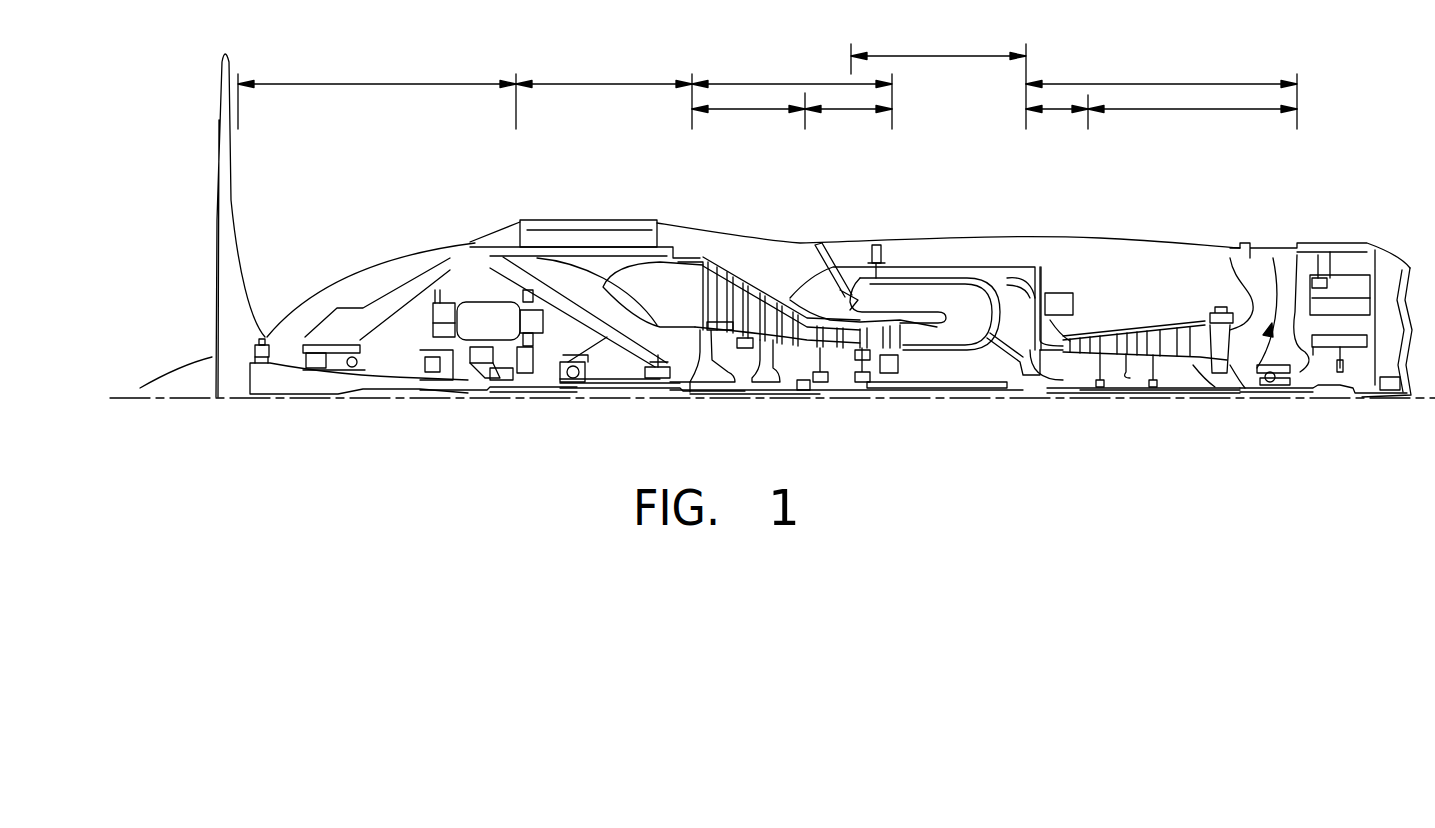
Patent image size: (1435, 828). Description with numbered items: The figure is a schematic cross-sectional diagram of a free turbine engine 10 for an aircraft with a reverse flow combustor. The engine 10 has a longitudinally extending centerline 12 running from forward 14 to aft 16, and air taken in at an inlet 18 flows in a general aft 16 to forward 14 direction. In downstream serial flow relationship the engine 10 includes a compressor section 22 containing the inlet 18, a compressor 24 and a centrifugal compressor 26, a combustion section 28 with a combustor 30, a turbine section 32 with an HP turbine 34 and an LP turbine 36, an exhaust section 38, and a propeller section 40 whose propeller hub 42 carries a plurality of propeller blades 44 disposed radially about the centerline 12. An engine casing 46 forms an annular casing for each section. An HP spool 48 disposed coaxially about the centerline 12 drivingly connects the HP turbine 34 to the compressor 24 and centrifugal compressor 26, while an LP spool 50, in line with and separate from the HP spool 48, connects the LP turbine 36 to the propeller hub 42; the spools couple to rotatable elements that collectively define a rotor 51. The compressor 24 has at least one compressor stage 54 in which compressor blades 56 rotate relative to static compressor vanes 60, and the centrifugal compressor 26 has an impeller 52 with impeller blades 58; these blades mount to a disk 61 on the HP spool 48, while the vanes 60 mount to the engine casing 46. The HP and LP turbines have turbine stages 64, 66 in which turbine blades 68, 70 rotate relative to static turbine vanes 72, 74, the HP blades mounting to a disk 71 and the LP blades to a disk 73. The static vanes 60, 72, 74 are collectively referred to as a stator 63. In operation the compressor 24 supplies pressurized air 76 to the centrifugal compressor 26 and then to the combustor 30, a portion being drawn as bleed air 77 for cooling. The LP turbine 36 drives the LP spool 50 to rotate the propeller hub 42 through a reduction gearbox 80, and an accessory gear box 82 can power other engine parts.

The engine 10 is at (1150, 215).
The centerline 12 is at (420, 398).
The forward 14 is at (378, 207).
The aft 16 is at (1343, 212).
The inlet 18 is at (1260, 235).
The compressor section 22 is at (1160, 84).
The compressor 24 is at (1195, 109).
The centrifugal compressor 26 is at (1046, 109).
The combustion section 28 is at (938, 56).
The combustor 30 is at (888, 292).
The turbine section 32 is at (793, 84).
The HP turbine 34 is at (848, 109).
The LP turbine 36 is at (750, 109).
The exhaust section 38 is at (606, 84).
The propeller section 40 is at (376, 84).
The propeller hub 42 is at (262, 339).
The propeller blades 44 is at (231, 185).
The engine casing 46 is at (1178, 240).
The HP shaft or spool 48 is at (870, 385).
The LP shaft or spool 50 is at (683, 380).
The rotor 51 is at (588, 388).
The impeller 52 is at (1045, 385).
The compressor stage 54 is at (1237, 441).
The compressor blades 56 is at (1200, 370).
The impeller blades 58 is at (1060, 337).
The static compressor vanes 60 is at (1228, 355).
The disk 61 is at (1170, 385).
The stator 63 is at (758, 285).
The turbine stages 64 is at (812, 441).
The turbine stages 66 is at (705, 212).
The turbine blades 68 is at (812, 385).
The turbine blades 70 is at (698, 275).
The disk 71 is at (945, 380).
The static turbine vanes 72 is at (845, 385).
The disk 73 is at (745, 385).
The static turbine vanes 74 is at (720, 290).
The pressurized air 76 is at (1300, 275).
The bleed air 77 is at (1100, 302).
The reduction gearbox 80 is at (465, 313).
The accessory gear box 82 is at (1337, 303).